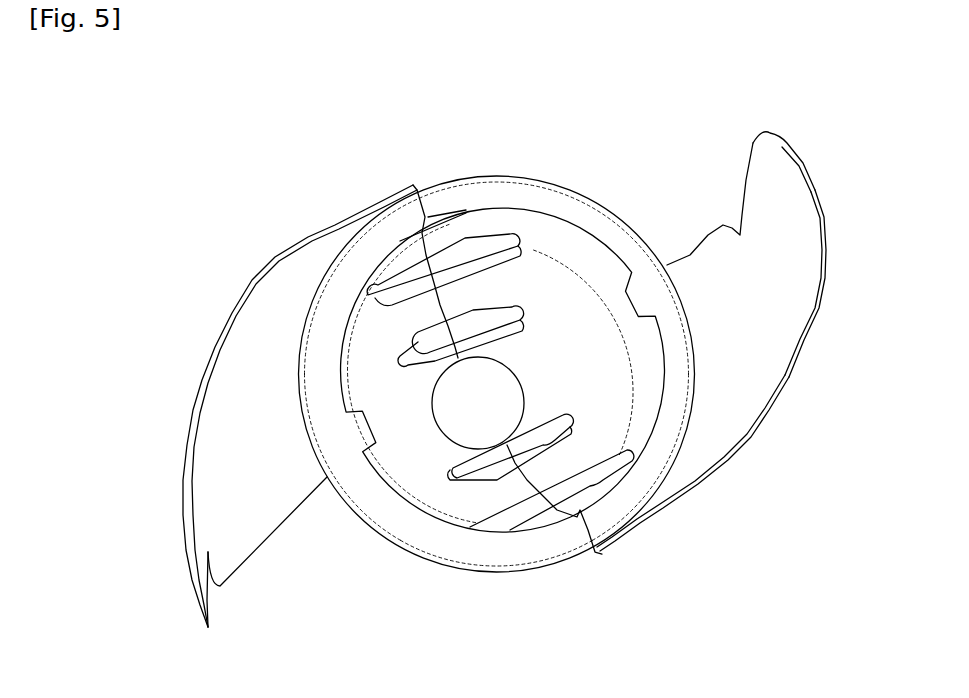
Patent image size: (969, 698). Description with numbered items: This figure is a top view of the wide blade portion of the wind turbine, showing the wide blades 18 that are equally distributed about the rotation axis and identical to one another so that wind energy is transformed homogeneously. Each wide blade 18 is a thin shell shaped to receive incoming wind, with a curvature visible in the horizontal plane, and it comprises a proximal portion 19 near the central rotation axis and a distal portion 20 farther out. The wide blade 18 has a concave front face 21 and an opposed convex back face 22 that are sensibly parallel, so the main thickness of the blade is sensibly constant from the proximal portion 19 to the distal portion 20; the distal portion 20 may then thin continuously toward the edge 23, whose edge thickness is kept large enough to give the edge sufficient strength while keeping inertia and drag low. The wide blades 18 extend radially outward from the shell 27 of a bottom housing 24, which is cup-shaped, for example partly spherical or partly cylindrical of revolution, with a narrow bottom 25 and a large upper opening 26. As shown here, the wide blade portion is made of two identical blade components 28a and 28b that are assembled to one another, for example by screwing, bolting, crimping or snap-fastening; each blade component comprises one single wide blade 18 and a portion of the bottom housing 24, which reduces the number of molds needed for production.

The wide blade 18 is at (152, 476).
The proximal portion 19 is at (597, 553).
The distal portion 20 is at (806, 164).
The concave front face 21 is at (715, 252).
The convex back face 22 is at (752, 439).
The edge 23 is at (769, 130).
The bottom housing 24 is at (476, 580).
The bottom 25 is at (538, 182).
The upper opening 26 is at (577, 307).
The shell 27 is at (382, 508).
The blade component 28a is at (477, 154).
The blade component 28b is at (406, 591).